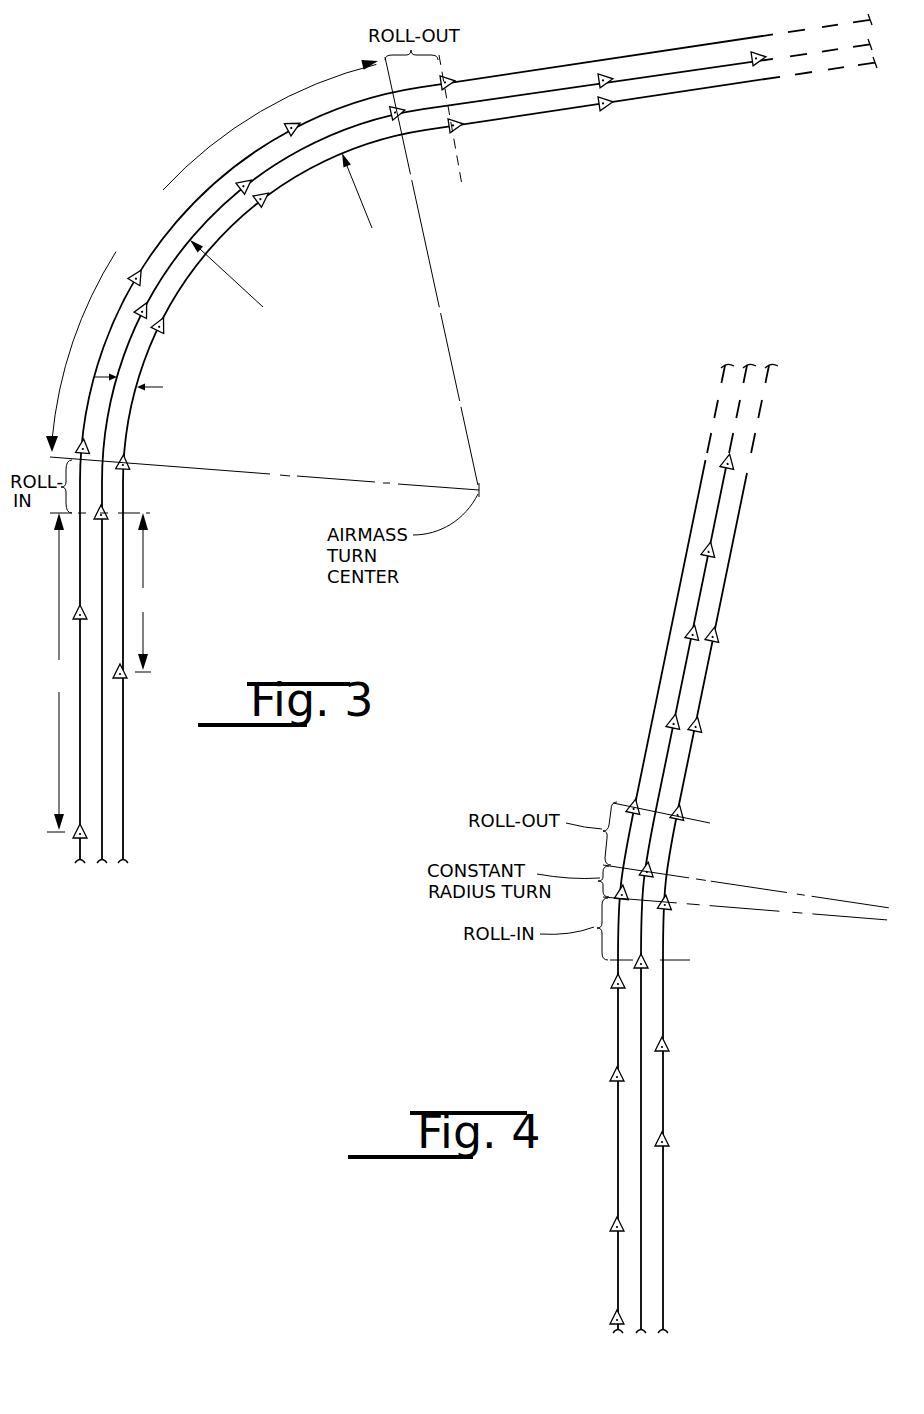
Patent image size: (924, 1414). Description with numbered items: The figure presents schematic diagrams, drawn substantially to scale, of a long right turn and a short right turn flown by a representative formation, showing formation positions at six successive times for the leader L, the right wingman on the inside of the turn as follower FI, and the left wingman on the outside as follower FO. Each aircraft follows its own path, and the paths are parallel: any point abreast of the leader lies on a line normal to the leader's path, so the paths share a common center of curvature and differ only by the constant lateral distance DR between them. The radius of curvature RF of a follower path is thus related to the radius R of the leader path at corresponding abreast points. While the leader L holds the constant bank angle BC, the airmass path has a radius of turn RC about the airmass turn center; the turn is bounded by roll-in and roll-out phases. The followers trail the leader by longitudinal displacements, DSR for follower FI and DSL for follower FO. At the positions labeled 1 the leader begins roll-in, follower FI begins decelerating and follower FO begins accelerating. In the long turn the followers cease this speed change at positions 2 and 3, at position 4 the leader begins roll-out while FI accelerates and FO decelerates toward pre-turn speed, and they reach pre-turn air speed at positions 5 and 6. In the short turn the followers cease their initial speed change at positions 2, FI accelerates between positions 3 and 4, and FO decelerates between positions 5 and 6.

In FIG. 3, the formation position 1 is at (97, 663).
In FIG. 4, the formation position 1 is at (634, 1130).
In FIG. 3, the formation position 2 is at (109, 455).
In FIG. 4, the formation position 2 is at (641, 1038).
In FIG. 3, the formation position 3 is at (159, 306).
In FIG. 4, the formation position 3 is at (642, 891).
In FIG. 3, the formation position 4 is at (266, 188).
In FIG. 4, the formation position 4 is at (649, 798).
In FIG. 3, the formation position 5 is at (453, 102).
In FIG. 4, the formation position 5 is at (661, 711).
In FIG. 3, the formation position 6 is at (607, 80).
In FIG. 4, the formation position 6 is at (678, 624).
In FIG. 3, the leader L is at (650, 74).
In FIG. 4, the leader L is at (736, 462).
In FIG. 3, the follower FO is at (72, 893).
In FIG. 4, the follower FO is at (562, 1276).
In FIG. 3, the follower FI is at (122, 845).
In FIG. 4, the follower FI is at (721, 637).
In FIG. 3, the radius of path L R is at (246, 300).
In FIG. 3, the radius of curvature RF of path F RF is at (362, 224).
In FIG. 3, the radius of turn Rc RC is at (450, 318).
In FIG. 3, the constant bank angle Bc BC is at (163, 190).
In FIG. 3, the distance DR is at (141, 394).
In FIG. 3, the follower displacement DSL is at (56, 672).
In FIG. 3, the follower displacement DSR is at (148, 592).